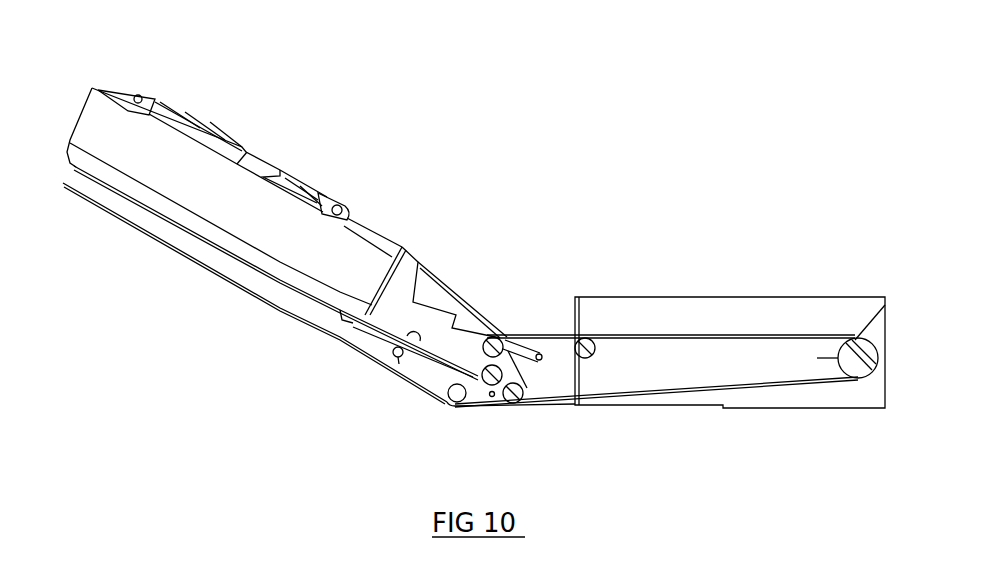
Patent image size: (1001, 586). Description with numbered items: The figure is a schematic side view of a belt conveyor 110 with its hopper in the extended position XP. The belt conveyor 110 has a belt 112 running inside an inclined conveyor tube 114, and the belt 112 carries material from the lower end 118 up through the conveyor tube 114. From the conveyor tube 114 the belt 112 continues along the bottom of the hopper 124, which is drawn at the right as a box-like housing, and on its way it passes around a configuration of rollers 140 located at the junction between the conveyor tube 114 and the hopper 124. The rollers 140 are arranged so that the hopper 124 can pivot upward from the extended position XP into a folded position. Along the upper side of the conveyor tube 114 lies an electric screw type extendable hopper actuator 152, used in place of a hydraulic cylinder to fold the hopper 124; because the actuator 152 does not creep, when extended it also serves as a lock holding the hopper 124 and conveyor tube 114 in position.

The belt conveyor 110 is at (590, 200).
The belt 112 is at (280, 308).
The conveyor tube 114 is at (197, 203).
The lower end 118 is at (378, 237).
The hopper 124 is at (827, 297).
The rollers 140 is at (527, 360).
The extendable hopper actuator 152 is at (278, 168).
The extended position XP is at (713, 297).